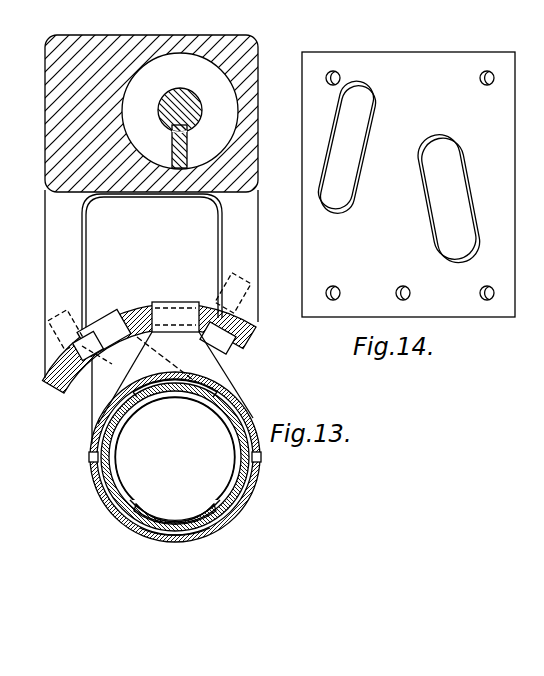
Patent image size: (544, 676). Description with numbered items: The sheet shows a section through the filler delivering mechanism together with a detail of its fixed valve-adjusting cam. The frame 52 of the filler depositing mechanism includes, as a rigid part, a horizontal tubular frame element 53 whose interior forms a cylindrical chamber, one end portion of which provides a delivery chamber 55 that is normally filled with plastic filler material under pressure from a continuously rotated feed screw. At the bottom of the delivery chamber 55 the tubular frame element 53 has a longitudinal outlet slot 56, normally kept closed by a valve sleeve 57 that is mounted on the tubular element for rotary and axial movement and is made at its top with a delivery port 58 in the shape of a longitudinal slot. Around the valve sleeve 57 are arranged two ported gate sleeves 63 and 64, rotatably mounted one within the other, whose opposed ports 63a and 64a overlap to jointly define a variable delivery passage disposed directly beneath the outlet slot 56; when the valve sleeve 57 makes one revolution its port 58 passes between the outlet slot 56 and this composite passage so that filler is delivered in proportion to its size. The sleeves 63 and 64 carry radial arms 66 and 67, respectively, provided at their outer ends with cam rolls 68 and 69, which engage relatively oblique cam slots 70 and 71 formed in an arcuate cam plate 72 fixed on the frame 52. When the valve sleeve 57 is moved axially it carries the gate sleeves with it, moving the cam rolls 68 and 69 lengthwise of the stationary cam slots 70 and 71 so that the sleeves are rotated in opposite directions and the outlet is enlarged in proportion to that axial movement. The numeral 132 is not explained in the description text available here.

In FIG. 13, the frame 52 is at (46, 97).
In FIG. 13, the keyhole bore 132 is at (177, 72).
In FIG. 13, the cam roll 68 is at (100, 328).
In FIG. 13, the arcuate cam plate 72 is at (140, 318).
In FIG. 14, the arcuate cam plate 72 is at (408, 184).
In FIG. 13, the cam roll 69 is at (180, 317).
In FIG. 13, the radial arm 67 is at (172, 387).
In FIG. 13, the radial arm 66 is at (154, 354).
In FIG. 13, the delivery port 58 is at (208, 392).
In FIG. 13, the ported gate sleeve 64 is at (246, 420).
In FIG. 13, the ported gate sleeve 63 is at (98, 451).
In FIG. 13, the tubular frame element 53 is at (119, 447).
In FIG. 13, the delivery chamber 55 is at (175, 457).
In FIG. 13, the outlet slot 56 is at (147, 510).
In FIG. 13, the valve sleeve 57 is at (184, 520).
In FIG. 13, the port 63a is at (149, 536).
In FIG. 13, the port 64a is at (197, 536).
In FIG. 14, the cam slot 70 is at (347, 147).
In FIG. 14, the cam slot 71 is at (448, 199).